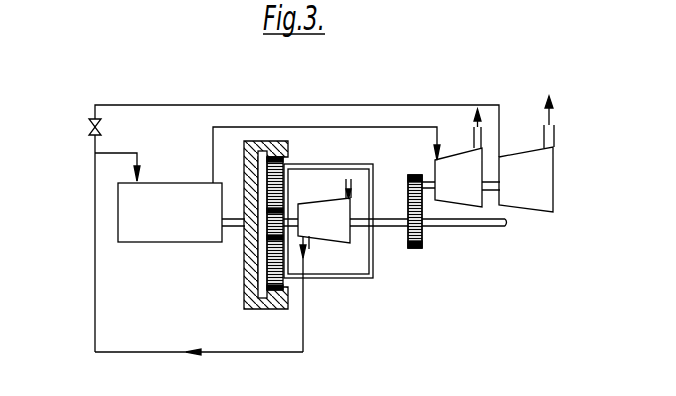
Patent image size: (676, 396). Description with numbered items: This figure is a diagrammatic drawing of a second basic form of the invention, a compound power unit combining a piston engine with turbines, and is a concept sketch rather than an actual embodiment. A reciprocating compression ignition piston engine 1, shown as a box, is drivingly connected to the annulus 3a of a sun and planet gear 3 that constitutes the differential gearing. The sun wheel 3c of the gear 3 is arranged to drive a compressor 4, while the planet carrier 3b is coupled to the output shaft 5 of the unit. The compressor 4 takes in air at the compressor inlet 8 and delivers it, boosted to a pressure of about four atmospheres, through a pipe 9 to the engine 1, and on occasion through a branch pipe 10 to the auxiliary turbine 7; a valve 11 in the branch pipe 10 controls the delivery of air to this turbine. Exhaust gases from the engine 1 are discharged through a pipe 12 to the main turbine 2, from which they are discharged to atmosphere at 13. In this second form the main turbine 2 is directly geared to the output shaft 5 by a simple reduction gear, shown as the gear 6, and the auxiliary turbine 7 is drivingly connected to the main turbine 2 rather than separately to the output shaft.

The piston engine 1 is at (129, 232).
The main turbine 2 is at (442, 166).
The sun and planet gear 3 is at (257, 238).
The annulus 3a is at (244, 290).
The planet carrier 3b is at (320, 279).
The sun wheel 3c is at (281, 220).
The compressor 4 is at (327, 239).
The output shaft 5 is at (478, 223).
The gear 6 is at (419, 243).
The auxiliary turbine 7 is at (549, 161).
The compressor inlet 8 is at (346, 188).
The pipe 9 is at (141, 351).
The branch pipe 10 is at (173, 104).
The valve 11 is at (88, 126).
The pipe 12 is at (213, 142).
The atmosphere discharge 13 is at (481, 135).